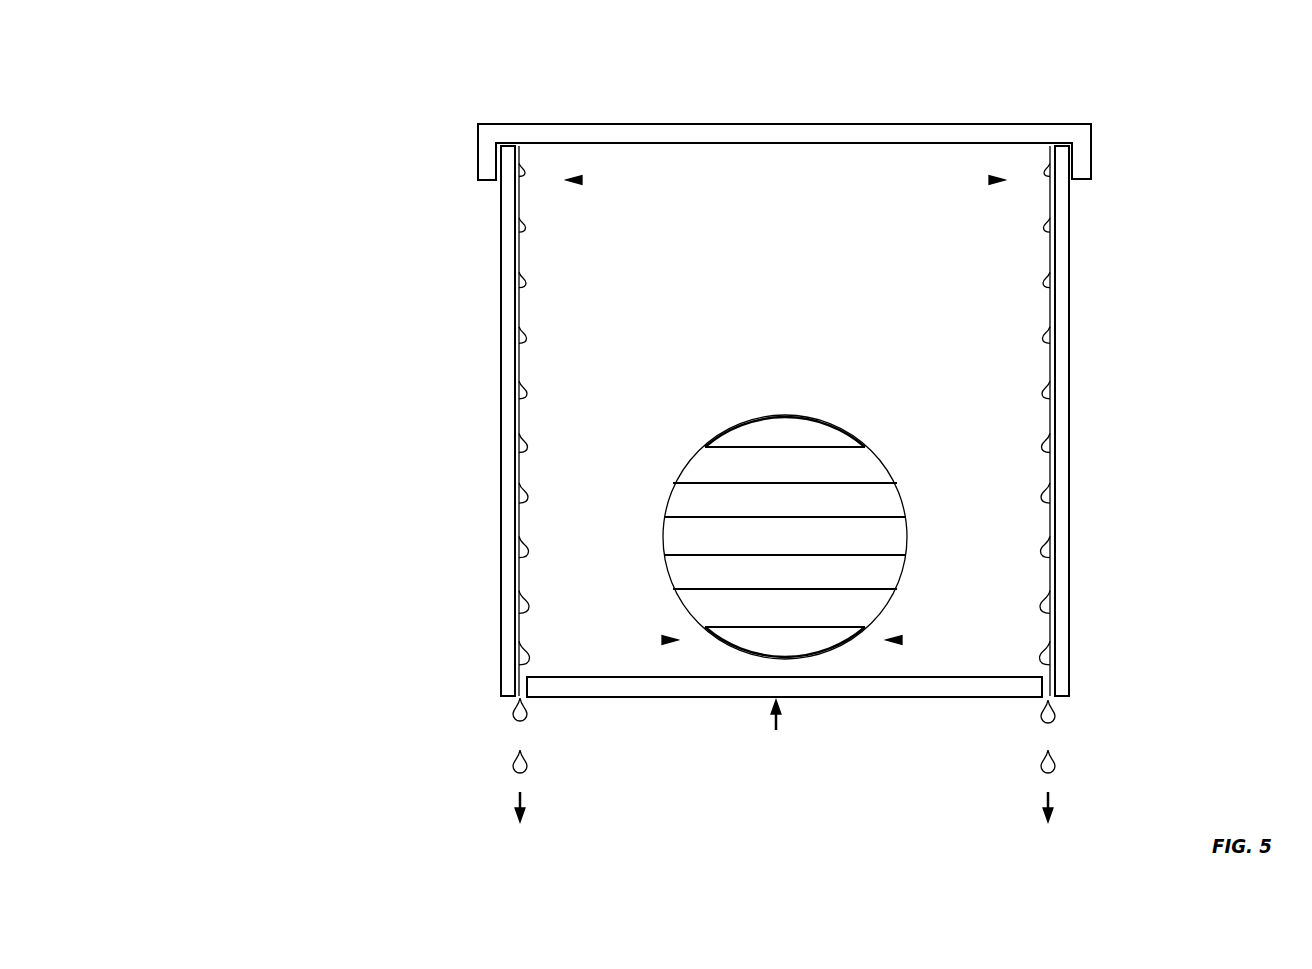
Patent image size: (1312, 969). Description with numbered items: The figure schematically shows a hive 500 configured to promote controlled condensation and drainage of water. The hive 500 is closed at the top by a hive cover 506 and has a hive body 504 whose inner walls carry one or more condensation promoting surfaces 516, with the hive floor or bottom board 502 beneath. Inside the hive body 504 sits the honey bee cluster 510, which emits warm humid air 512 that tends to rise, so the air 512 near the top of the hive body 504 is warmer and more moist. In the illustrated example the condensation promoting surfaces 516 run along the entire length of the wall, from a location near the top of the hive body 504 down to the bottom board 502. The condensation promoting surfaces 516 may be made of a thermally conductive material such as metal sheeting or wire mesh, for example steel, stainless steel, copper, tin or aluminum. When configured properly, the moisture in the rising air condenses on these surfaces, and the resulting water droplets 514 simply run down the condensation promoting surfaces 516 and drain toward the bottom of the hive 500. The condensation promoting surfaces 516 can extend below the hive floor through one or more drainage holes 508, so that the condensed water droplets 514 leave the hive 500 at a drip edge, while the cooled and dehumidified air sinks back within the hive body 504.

The hive 500 is at (816, 47).
The bottom board 502 is at (888, 700).
The hive body 504 is at (482, 438).
The hive cover 506 is at (478, 141).
The drainage holes 508 is at (514, 686).
The honey bee cluster 510 is at (880, 547).
The air 512 is at (840, 227).
The water droplets 514 is at (510, 548).
The condensation promoting surfaces 516 is at (519, 248).